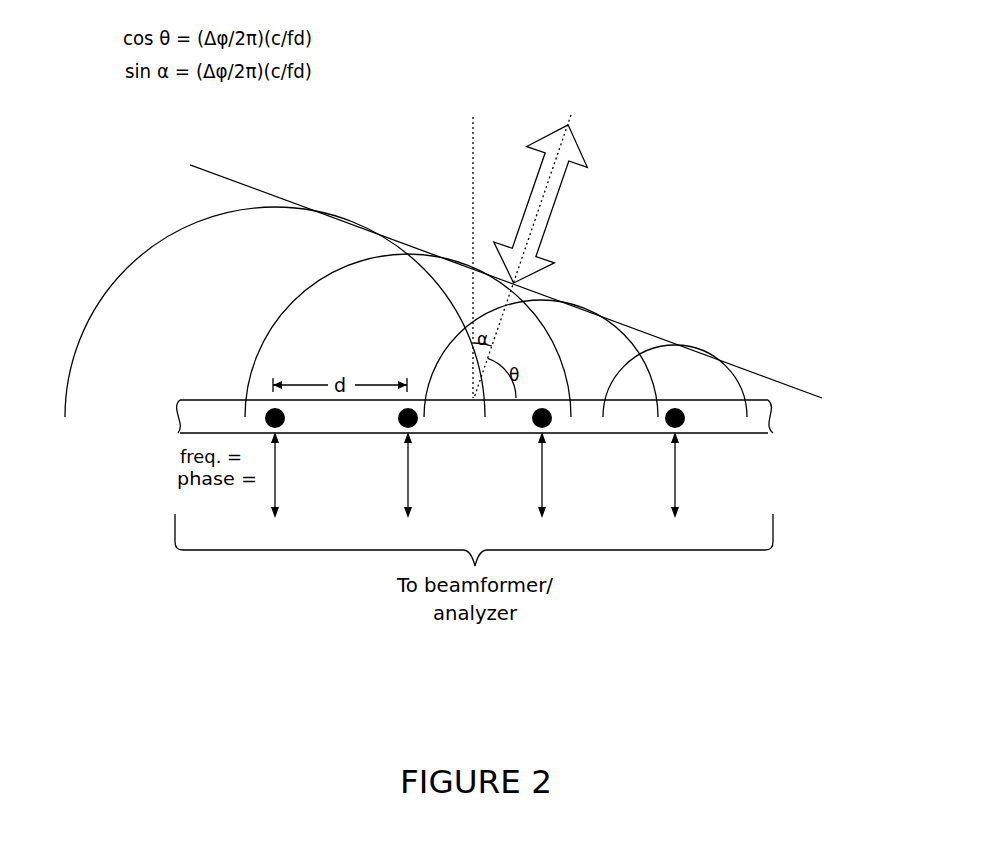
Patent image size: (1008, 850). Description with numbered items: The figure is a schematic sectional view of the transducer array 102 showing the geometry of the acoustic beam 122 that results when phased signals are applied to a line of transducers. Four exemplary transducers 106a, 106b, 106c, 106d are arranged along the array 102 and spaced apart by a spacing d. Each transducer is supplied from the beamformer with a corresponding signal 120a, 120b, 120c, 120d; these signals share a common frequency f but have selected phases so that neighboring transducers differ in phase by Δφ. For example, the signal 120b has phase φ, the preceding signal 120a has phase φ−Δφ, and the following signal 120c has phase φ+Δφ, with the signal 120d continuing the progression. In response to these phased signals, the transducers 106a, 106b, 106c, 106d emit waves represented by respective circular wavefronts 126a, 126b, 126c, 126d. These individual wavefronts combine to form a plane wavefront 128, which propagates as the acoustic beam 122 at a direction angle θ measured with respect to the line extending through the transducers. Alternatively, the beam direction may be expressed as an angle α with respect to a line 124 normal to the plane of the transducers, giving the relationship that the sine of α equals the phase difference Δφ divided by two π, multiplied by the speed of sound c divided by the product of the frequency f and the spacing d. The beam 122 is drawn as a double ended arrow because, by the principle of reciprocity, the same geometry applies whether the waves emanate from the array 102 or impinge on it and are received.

The transducer array 102 is at (226, 400).
The transducer 106a is at (299, 413).
The transducer 106b is at (400, 416).
The transducer 106c is at (536, 413).
The transducer 106d is at (683, 414).
The signal 120a is at (277, 494).
The signal 120b is at (410, 494).
The signal 120c is at (545, 494).
The signal 120d is at (678, 494).
The acoustic beam 122 is at (560, 188).
The normal line 124 is at (470, 192).
The wavefront 126a is at (149, 250).
The wavefront 126b is at (308, 291).
The wavefront 126c is at (450, 342).
The wavefront 126d is at (626, 366).
The plane wavefront 128 is at (653, 335).